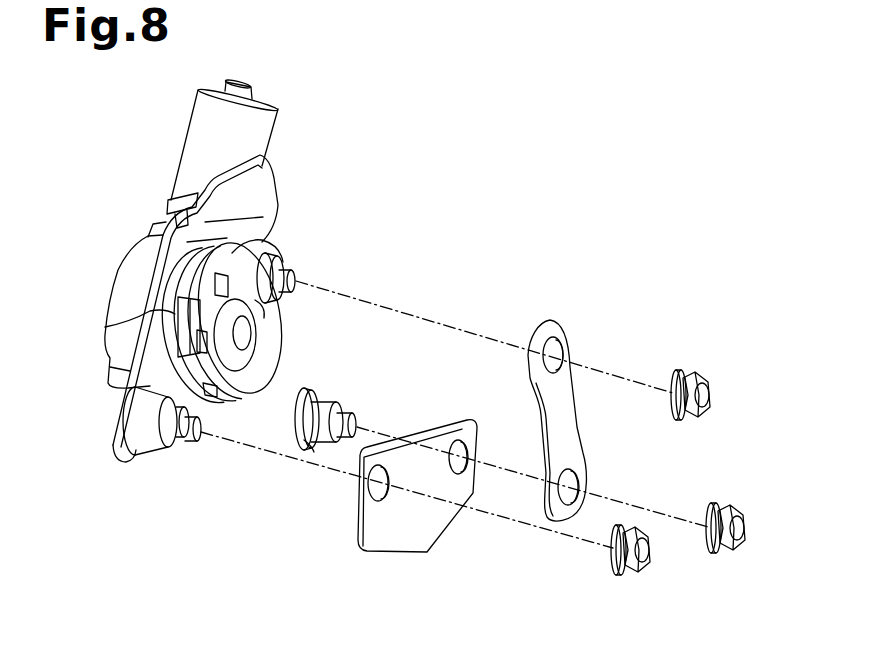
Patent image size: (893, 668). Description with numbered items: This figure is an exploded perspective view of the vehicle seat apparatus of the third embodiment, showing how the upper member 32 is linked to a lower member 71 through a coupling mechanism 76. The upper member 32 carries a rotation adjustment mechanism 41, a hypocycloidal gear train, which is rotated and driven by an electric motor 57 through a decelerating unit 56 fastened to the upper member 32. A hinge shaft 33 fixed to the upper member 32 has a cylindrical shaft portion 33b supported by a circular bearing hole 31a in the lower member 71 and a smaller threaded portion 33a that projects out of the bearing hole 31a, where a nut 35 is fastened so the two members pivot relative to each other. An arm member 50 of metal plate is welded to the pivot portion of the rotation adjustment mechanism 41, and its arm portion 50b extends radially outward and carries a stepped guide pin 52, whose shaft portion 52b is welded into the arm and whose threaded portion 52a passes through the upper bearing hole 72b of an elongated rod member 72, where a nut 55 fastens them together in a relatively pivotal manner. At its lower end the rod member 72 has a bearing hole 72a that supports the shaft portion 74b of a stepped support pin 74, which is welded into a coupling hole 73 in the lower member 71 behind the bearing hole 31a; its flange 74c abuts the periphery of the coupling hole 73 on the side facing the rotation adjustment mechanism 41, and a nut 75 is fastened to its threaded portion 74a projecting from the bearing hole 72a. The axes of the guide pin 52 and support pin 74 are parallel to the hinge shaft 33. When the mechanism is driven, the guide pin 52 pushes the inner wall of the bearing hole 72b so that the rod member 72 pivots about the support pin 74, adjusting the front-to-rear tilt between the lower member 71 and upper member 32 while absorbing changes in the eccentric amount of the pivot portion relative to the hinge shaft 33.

The electric motor 57 is at (200, 121).
The upper member 32 is at (266, 181).
The decelerating unit 56 is at (121, 271).
The rotation adjustment mechanism 41 is at (106, 325).
The arm member 50 is at (277, 318).
The arm portion 50b is at (276, 253).
The guide pin 52 is at (291, 274).
The threaded portion 52a is at (293, 289).
The shaft portion 52b is at (262, 309).
The hinge shaft 33 is at (138, 441).
The threaded portion 33a is at (191, 443).
The shaft portion 33b is at (168, 444).
The support pin 74 is at (318, 433).
The threaded portion 74a is at (354, 416).
The shaft portion 74b is at (314, 451).
The flange 74c is at (272, 419).
The lower member 71 is at (440, 531).
The bearing hole 31a is at (368, 490).
The coupling hole 73 is at (456, 444).
The rod member 72 is at (569, 412).
The bearing hole 72a is at (551, 507).
The bearing hole 72b is at (548, 343).
The nut 55 is at (686, 419).
The nut 35 is at (628, 575).
The nut 75 is at (721, 556).
The coupling mechanism 76 is at (506, 264).